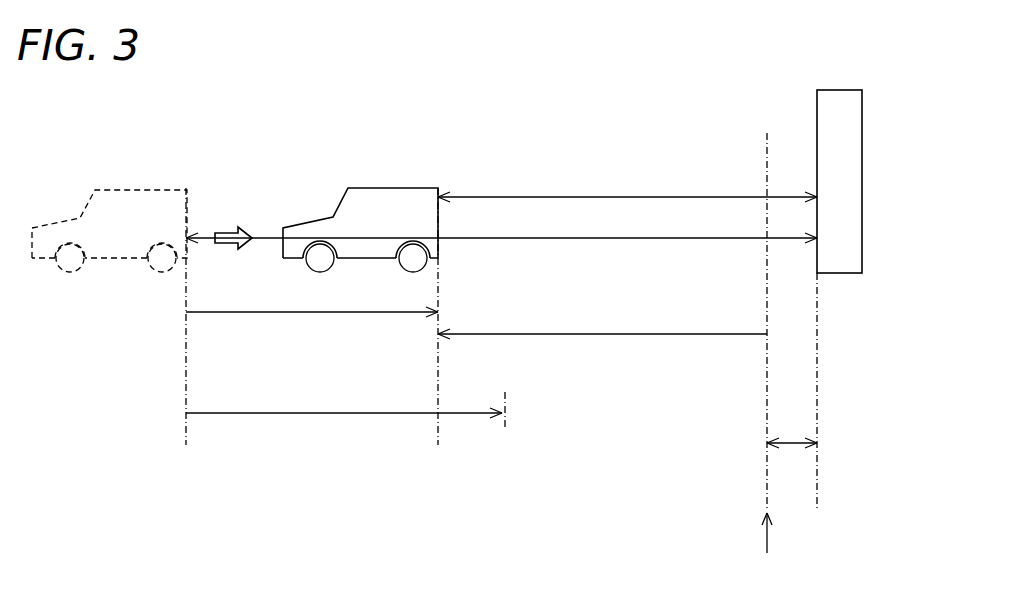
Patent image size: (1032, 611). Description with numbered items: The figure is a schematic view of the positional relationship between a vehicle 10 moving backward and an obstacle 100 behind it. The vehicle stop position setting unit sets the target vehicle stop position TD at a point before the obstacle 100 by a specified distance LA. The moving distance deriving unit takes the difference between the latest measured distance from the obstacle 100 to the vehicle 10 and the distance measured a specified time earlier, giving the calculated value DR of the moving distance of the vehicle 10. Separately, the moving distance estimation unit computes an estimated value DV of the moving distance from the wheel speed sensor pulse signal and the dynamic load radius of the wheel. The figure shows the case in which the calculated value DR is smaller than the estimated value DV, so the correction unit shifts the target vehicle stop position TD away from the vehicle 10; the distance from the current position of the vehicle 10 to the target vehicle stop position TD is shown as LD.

The vehicle 10 is at (158, 186).
The obstacle 100 is at (862, 208).
The calculated value of the moving distance of the vehicle DR is at (308, 315).
The estimated value of the moving distance of the vehicle DV is at (308, 416).
The distance from the current position of the vehicle to the target vehicle stop pos LD is at (602, 338).
The specified distance LA is at (797, 447).
The target vehicle stop position TD is at (766, 549).